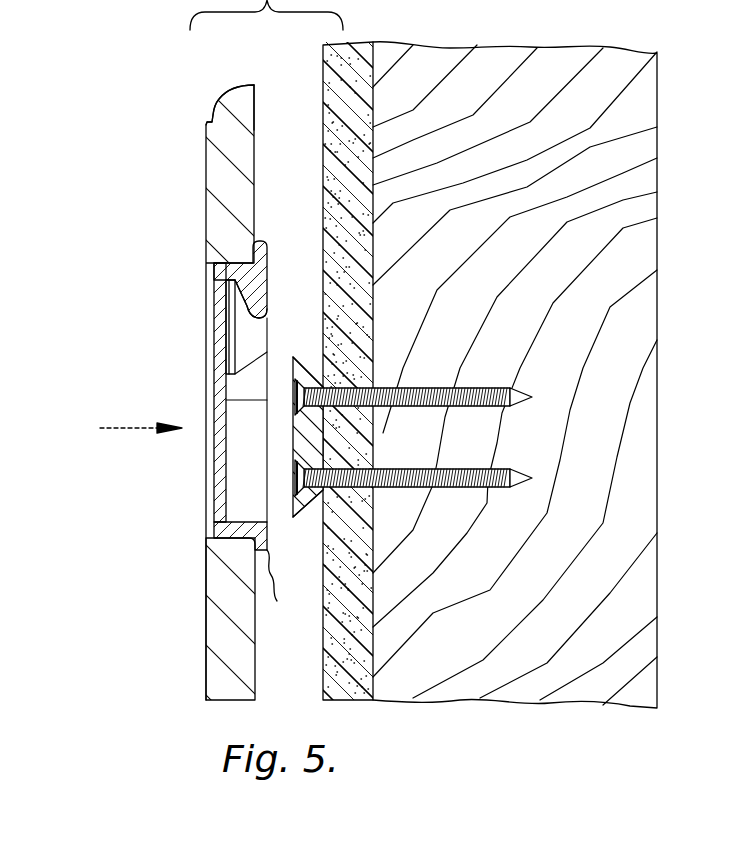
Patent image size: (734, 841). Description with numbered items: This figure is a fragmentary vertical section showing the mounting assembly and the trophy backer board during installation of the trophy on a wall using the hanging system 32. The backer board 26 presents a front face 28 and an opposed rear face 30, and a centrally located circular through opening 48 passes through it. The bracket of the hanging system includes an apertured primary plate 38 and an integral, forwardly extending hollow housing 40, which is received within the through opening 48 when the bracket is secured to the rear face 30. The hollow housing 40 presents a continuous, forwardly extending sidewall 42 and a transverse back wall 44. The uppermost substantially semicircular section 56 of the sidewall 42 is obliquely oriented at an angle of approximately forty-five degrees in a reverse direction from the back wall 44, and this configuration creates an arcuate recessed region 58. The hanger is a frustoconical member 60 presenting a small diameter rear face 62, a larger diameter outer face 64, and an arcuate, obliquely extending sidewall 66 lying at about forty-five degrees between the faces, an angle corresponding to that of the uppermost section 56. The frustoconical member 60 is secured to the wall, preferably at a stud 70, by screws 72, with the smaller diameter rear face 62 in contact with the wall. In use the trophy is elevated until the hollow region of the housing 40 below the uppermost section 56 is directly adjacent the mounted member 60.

The backer board 26 is at (218, 97).
The front face 28 is at (217, 380).
The rear face 30 is at (256, 112).
The hanging system 32 is at (275, 234).
The primary plate 38 is at (287, 586).
The hollow housing 40 is at (226, 527).
The sidewall 42 is at (232, 543).
The back wall 44 is at (216, 362).
The through opening 48 is at (213, 263).
The uppermost section 56 is at (263, 316).
The recessed region 58 is at (235, 325).
The frustoconical member 60 is at (306, 384).
The rear face 62 is at (303, 437).
The outer face 64 is at (304, 506).
The sidewall 66 is at (300, 372).
The stud 70 is at (630, 450).
The screws 72 is at (420, 422).